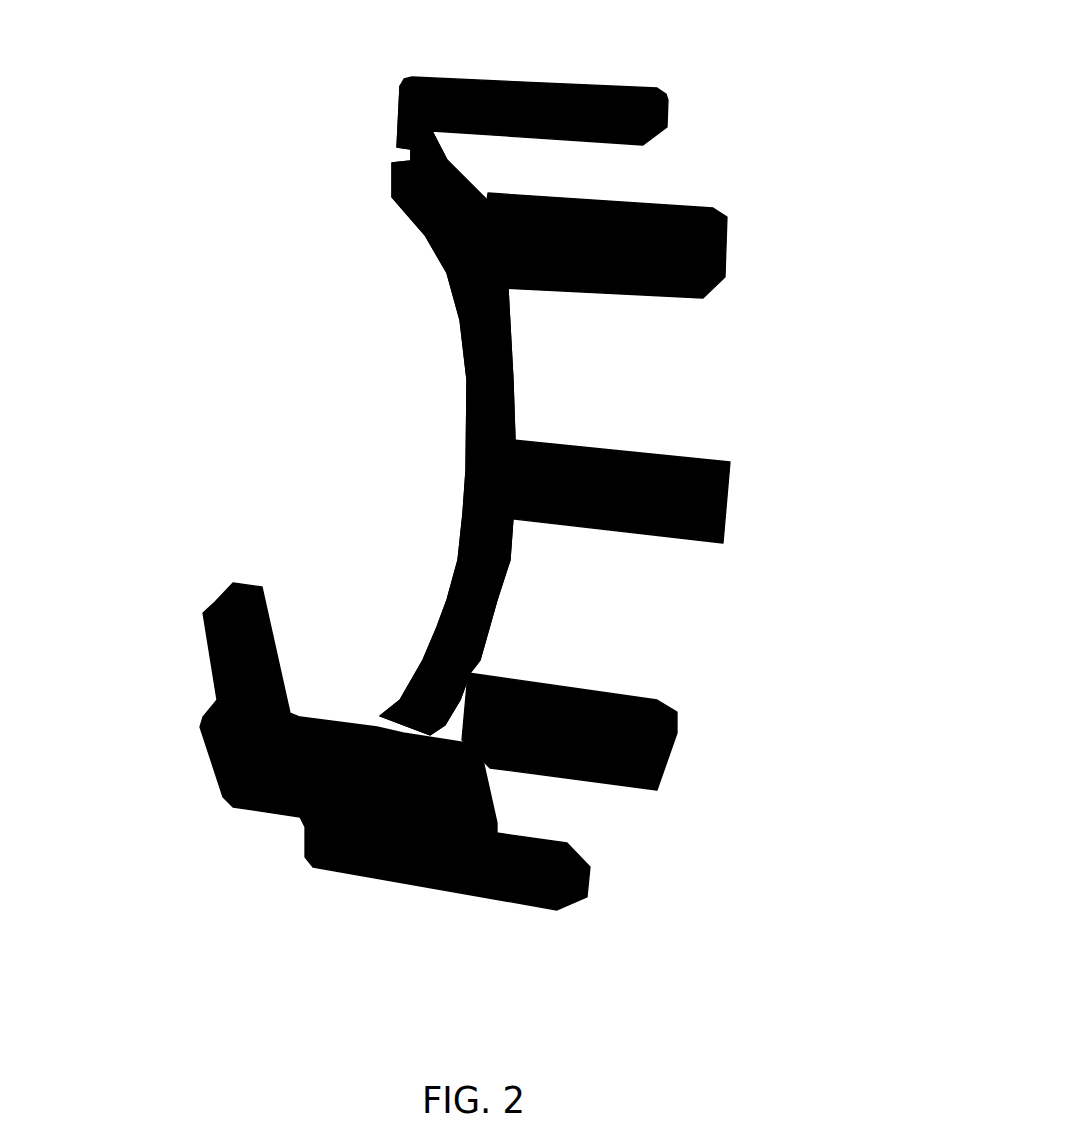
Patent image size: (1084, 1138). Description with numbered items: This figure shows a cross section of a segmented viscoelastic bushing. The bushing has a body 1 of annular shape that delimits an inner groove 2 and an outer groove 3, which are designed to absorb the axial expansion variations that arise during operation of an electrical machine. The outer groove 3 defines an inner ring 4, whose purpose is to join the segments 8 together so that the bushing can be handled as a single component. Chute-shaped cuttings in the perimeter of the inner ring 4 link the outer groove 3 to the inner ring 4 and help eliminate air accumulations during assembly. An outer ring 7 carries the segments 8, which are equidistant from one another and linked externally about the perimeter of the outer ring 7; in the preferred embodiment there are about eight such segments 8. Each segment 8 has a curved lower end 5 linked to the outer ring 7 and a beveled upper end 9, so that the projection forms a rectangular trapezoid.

The body 1 is at (172, 905).
The inner groove 2 is at (417, 173).
The outer groove 3 is at (407, 148).
The inner ring 4 is at (483, 418).
The lower end 5 is at (408, 78).
The outer ring 7 is at (505, 382).
The segments 8 is at (578, 97).
The beveled upper end 9 is at (632, 107).